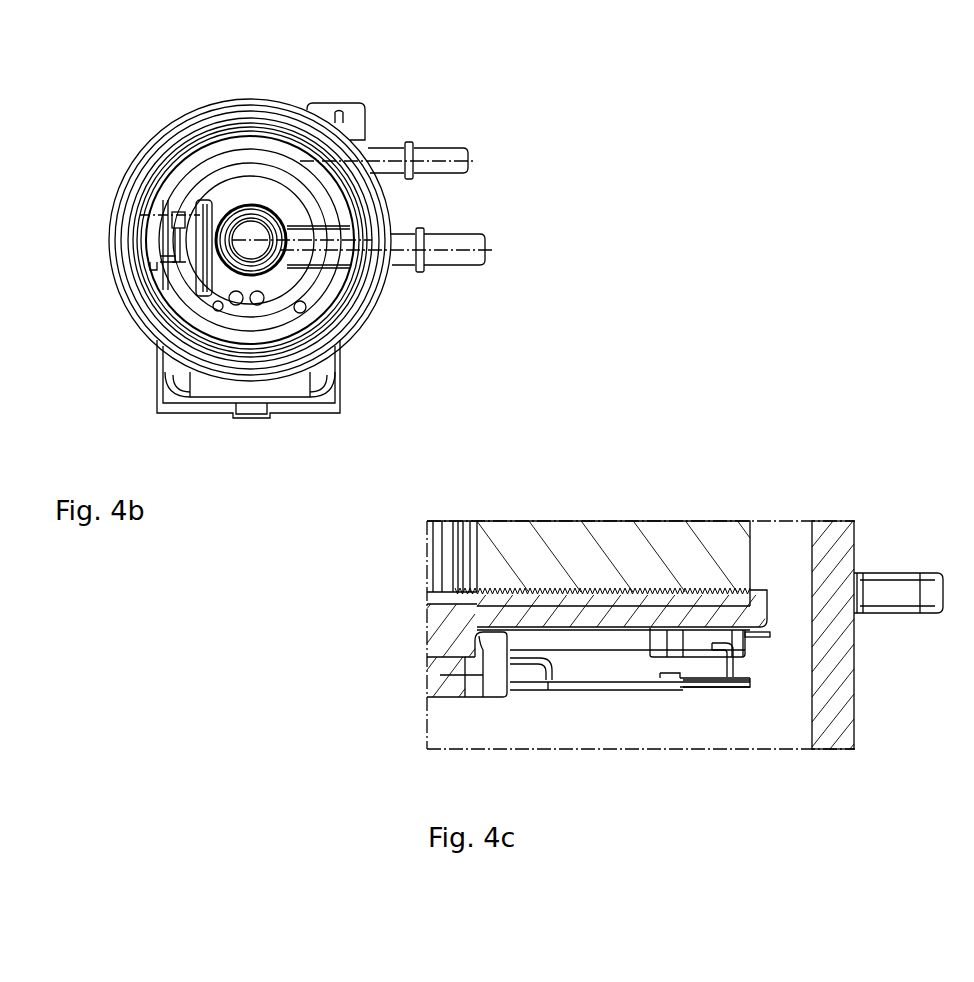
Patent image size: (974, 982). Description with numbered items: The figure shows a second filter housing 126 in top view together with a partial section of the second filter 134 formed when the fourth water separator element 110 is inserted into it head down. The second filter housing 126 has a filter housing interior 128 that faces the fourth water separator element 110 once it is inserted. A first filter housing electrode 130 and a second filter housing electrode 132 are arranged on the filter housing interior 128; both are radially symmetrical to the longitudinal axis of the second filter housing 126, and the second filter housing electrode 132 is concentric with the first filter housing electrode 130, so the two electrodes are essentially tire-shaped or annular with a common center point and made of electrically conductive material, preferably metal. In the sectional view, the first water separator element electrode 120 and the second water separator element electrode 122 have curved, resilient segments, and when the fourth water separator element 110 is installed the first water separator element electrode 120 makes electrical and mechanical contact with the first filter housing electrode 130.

In FIG. 4C, the fourth water separator element 110 is at (762, 532).
In FIG. 4C, the first water separator element electrode 120 is at (540, 667).
In FIG. 4C, the second water separator element electrode 122 is at (718, 663).
In FIG. 4B, the second filter housing 126 is at (143, 91).
In FIG. 4C, the second filter housing 126 is at (864, 551).
In FIG. 4B, the filter housing interior 128 is at (226, 196).
In FIG. 4B, the first filter housing electrode 130 is at (182, 222).
In FIG. 4C, the first filter housing electrode 130 is at (572, 687).
In FIG. 4B, the second filter housing electrode 132 is at (156, 261).
In FIG. 4C, the second filter housing electrode 132 is at (715, 683).
In FIG. 4C, the second filter 134 is at (798, 460).